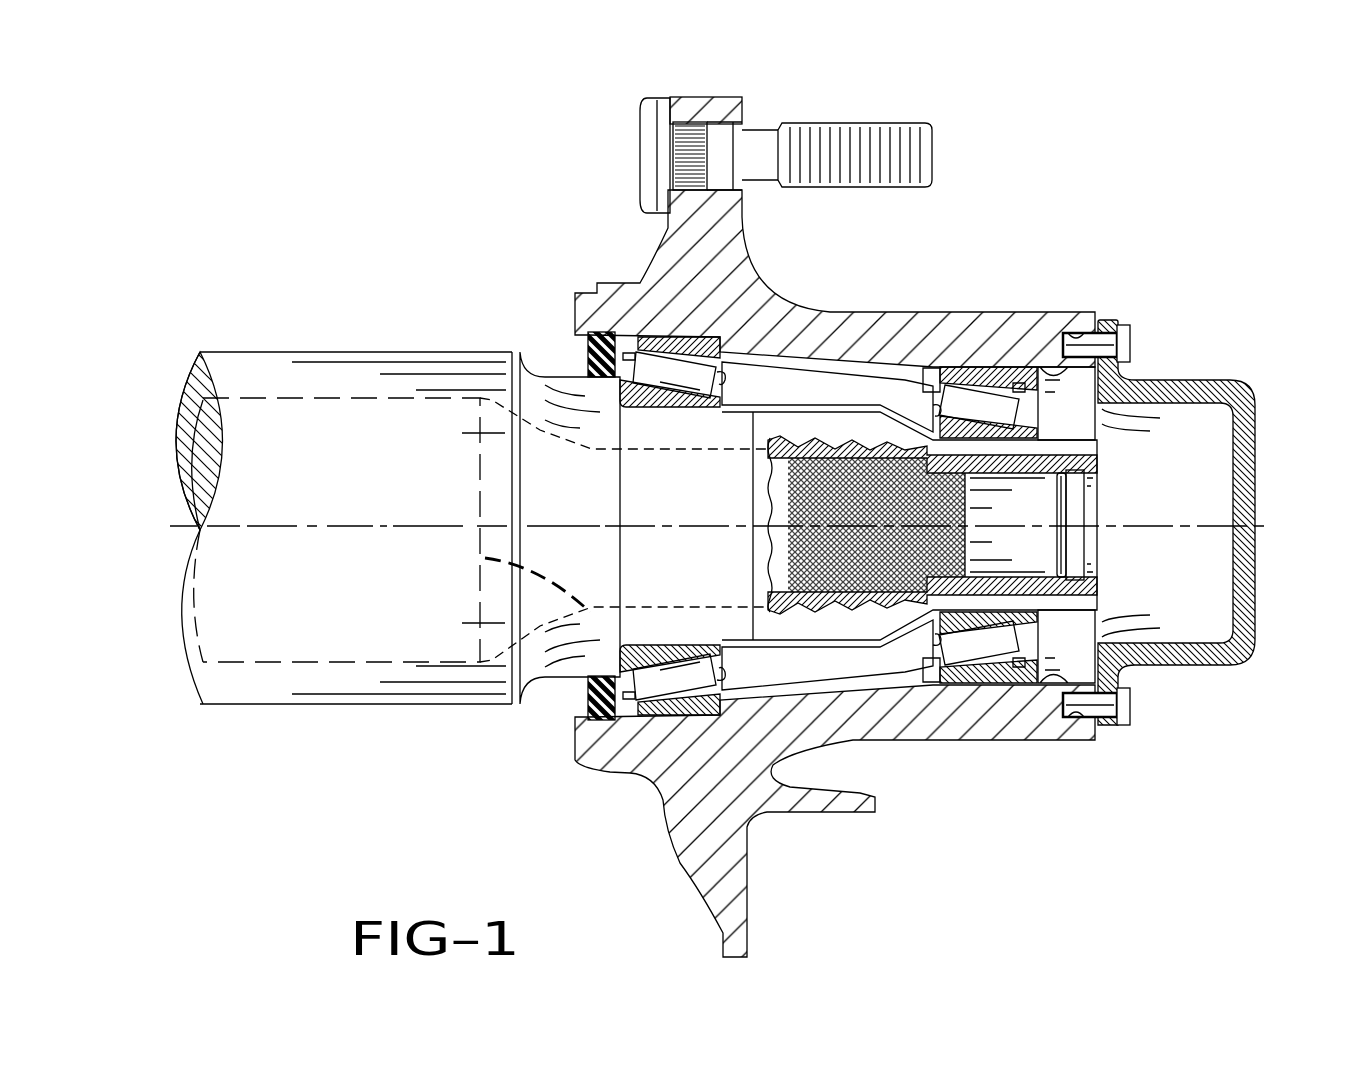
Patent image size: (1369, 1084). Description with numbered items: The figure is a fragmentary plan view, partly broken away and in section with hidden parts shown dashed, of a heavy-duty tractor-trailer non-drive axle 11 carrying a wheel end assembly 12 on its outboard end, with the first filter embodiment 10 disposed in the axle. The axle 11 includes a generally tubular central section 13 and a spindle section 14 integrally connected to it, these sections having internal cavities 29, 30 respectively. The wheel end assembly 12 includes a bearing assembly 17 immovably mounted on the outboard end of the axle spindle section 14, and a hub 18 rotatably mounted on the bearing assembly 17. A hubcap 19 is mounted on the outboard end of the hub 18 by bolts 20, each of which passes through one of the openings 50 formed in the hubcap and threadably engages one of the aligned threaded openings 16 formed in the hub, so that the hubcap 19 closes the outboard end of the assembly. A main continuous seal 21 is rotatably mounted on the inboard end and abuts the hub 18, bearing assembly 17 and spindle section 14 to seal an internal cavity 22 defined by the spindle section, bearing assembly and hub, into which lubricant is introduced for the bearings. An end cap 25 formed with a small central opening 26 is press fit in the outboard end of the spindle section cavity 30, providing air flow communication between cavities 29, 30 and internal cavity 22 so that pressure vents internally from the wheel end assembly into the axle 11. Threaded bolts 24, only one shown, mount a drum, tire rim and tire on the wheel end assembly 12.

The first filter embodiment 10 is at (798, 539).
The non-drive axle 11 is at (385, 352).
The wheel end assembly 12 is at (929, 313).
The central section 13 is at (268, 352).
The spindle section 14 is at (560, 372).
The threaded openings 16 is at (1084, 333).
The bearing assembly 17 is at (681, 334).
The hub 18 is at (890, 312).
The hubcap 19 is at (1253, 442).
The bolts 20 is at (1127, 322).
The main continuous seal 21 is at (602, 325).
The internal cavity 22 is at (1033, 372).
The threaded bolts 24 is at (750, 130).
The end cap 25 is at (1072, 492).
The central opening 26 is at (1060, 528).
The internal cavity 29 is at (186, 432).
The internal cavity 30 is at (485, 560).
The openings 50 is at (1130, 346).